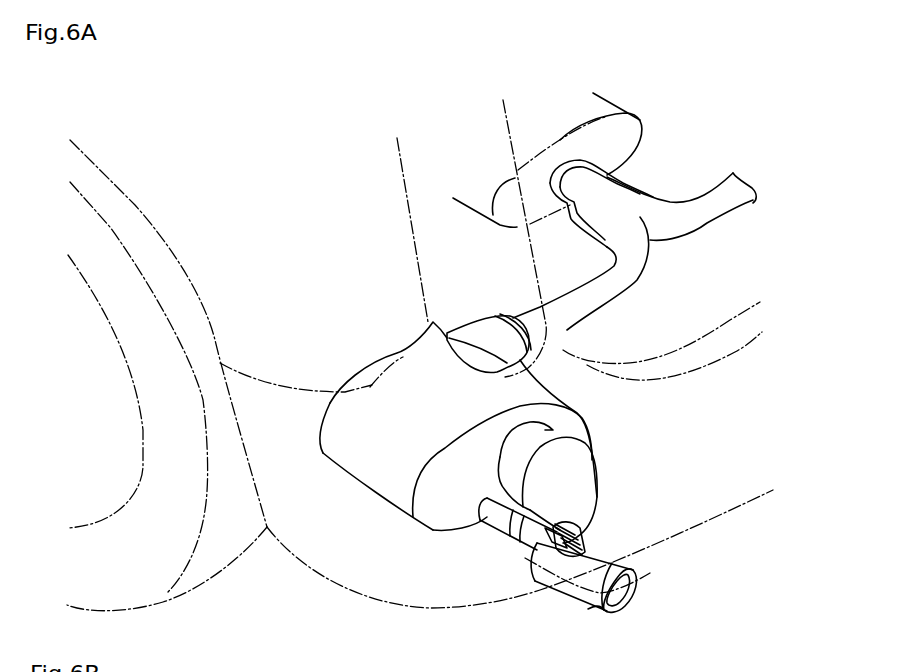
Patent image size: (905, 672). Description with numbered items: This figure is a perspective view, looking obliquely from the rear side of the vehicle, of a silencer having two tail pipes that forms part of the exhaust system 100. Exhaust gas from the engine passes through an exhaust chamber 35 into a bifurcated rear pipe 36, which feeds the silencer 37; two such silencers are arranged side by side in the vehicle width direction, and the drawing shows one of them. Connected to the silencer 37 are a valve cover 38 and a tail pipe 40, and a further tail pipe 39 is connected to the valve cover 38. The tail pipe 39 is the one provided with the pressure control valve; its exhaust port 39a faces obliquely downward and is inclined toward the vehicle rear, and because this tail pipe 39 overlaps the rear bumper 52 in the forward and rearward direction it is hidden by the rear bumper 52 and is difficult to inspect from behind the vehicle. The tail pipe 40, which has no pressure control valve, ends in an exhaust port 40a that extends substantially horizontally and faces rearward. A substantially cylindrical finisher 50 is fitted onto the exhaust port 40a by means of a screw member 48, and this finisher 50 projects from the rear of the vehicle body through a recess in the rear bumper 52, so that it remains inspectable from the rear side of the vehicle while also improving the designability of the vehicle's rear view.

The exhaust system 100 is at (670, 117).
The exhaust chamber 35 is at (612, 107).
The bifurcated rear pipe 36 is at (712, 213).
The silencer 37 is at (363, 495).
The valve cover 38 is at (593, 458).
The tail pipe 39 is at (601, 565).
The exhaust port 39a is at (622, 555).
The tail pipe 40 is at (608, 599).
The exhaust port 40a is at (590, 609).
The screw member 48 is at (590, 542).
The finisher 50 is at (635, 594).
The rear bumper 52 is at (415, 610).